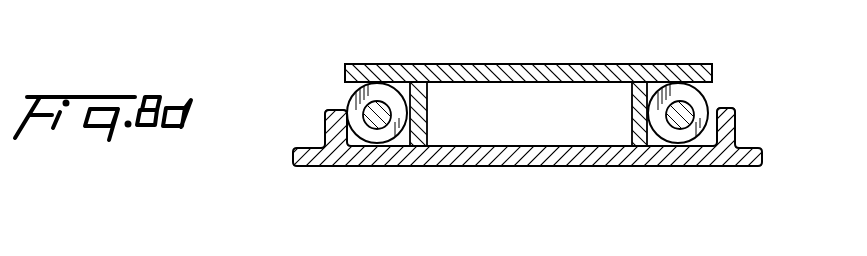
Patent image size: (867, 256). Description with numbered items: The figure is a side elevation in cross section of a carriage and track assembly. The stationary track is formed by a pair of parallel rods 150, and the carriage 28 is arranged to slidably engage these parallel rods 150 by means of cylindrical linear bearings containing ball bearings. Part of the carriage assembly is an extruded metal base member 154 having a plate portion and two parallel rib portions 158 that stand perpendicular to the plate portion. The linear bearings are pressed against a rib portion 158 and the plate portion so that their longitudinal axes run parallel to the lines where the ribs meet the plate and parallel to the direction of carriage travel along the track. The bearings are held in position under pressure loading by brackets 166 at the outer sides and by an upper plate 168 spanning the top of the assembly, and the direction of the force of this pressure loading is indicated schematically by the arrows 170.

The carriage 28 is at (490, 52).
The parallel rods 150 is at (688, 118).
The extruded metal base member 154 is at (566, 150).
The rib portions 158 is at (631, 108).
The brackets 166 is at (728, 166).
The upper plate 168 is at (543, 64).
The arrows 170 is at (681, 3).